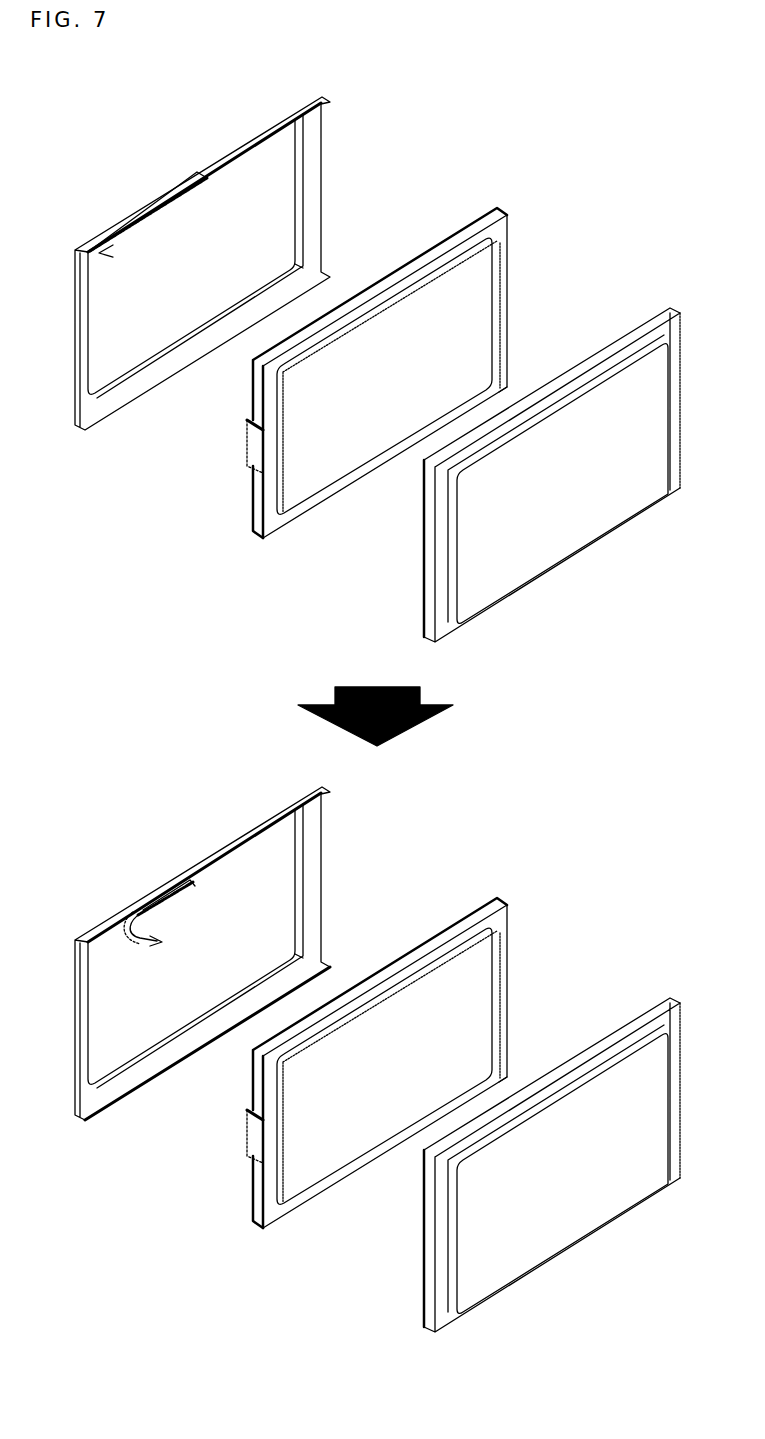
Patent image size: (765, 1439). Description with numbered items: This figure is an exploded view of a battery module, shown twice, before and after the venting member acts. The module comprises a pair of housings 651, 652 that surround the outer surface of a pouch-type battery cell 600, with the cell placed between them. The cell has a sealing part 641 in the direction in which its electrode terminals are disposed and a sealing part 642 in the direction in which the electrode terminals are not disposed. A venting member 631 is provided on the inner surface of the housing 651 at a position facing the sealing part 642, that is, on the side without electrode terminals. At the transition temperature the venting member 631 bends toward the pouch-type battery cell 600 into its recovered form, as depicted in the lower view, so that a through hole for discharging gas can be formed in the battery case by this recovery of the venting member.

The pouch-type battery cell 600 is at (254, 500).
The venting member 631 is at (145, 222).
The sealing part 641 is at (272, 386).
The sealing part 642 is at (450, 232).
The housing 651 is at (228, 152).
The housing 652 is at (660, 308).